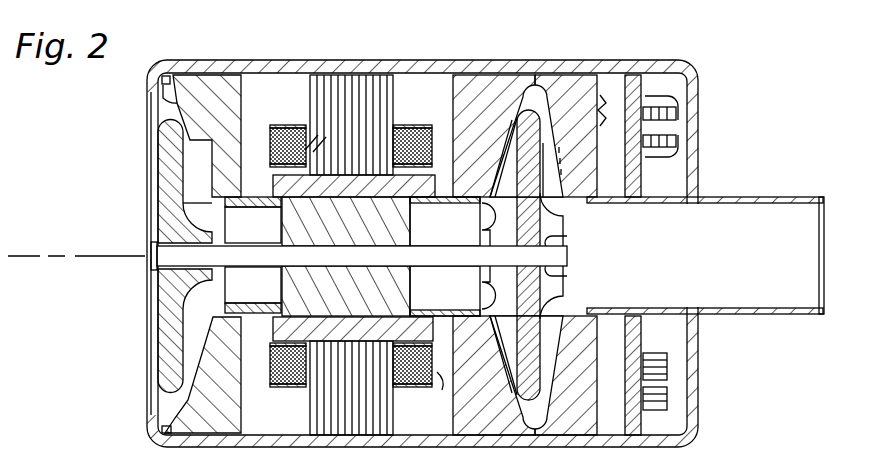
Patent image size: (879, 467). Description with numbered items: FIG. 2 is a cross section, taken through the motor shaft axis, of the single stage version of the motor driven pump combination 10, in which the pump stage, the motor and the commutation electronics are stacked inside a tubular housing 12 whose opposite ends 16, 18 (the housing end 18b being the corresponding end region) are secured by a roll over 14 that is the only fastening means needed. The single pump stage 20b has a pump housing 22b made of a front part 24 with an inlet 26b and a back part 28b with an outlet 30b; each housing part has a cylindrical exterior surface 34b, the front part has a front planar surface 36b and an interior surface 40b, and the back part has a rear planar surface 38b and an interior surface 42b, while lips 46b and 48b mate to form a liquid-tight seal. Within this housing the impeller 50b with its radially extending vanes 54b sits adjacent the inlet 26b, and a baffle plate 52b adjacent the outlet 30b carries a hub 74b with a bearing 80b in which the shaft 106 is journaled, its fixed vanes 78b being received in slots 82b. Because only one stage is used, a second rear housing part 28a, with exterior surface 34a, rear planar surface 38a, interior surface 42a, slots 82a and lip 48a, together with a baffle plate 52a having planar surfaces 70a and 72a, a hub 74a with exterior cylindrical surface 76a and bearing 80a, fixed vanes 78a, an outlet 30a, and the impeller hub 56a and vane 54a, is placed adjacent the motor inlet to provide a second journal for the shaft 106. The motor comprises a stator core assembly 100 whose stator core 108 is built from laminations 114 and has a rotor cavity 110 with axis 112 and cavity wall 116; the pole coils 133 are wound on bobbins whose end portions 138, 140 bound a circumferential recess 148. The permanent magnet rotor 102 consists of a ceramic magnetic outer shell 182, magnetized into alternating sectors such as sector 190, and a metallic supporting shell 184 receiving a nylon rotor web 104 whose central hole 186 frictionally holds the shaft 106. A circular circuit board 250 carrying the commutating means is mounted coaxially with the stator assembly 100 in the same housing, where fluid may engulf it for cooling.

The motor driven pump combination 10 is at (340, 61).
The tubular housing 12 is at (592, 73).
The roll over 14 is at (149, 88).
The end 16 is at (148, 124).
The end 18 is at (699, 123).
The magnetic sector 190 is at (699, 152).
The stator core assembly 100 is at (397, 91).
The pump housing 22b is at (469, 80).
The cylindrical exterior surface 34a is at (186, 73).
The cylindrical exterior surface 34b is at (577, 80).
The lip 48a is at (166, 76).
The lip 48b is at (648, 391).
The rear housing part 28a is at (197, 88).
The rear housing part 28b is at (580, 441).
The rear planar surface 38a is at (248, 76).
The rear planar surface 38b is at (614, 161).
The interior surface 42a is at (160, 104).
The interior surface 42b is at (600, 334).
The vane 54a is at (170, 157).
The vane 54b is at (486, 228).
The hub 56a is at (185, 222).
The axis 112 is at (83, 257).
The baffle plate 52a is at (150, 316).
The baffle plate 52b is at (622, 293).
The planar surface 70a is at (157, 361).
The fixed vanes 78a is at (196, 162).
The fixed vanes 78b is at (560, 208).
The radially extending slots 82a is at (196, 150).
The radially extending slots 82b is at (598, 112).
The end portion 138 is at (278, 124).
The end portion 140 is at (417, 127).
The core laminations 114 is at (278, 179).
The exterior cylindrical surface 76a is at (208, 227).
The outlet 30a is at (263, 209).
The outlet 30b is at (674, 204).
The bearing 80a is at (192, 246).
The bearing 80b is at (562, 274).
The hub 74a is at (203, 283).
The hub 74b is at (564, 243).
The planar surface 72a is at (218, 308).
The outer shell 182 is at (290, 320).
The metallic supporting shell 184 is at (276, 348).
The pole coils 133 is at (270, 366).
The stator core 108 is at (397, 443).
The wall 116 is at (378, 372).
The circumferential recess 148 is at (447, 391).
The front housing part 24 is at (428, 420).
The rotor cavity 110 is at (428, 340).
The interior surface 40b is at (490, 316).
The rotor web 104 is at (392, 292).
The inlet 26b is at (444, 306).
The impeller 50b is at (486, 275).
The cylindrical hole 186 is at (416, 244).
The permanent magnet rotor 102 is at (441, 206).
The front planar surface 36b is at (462, 192).
The shaft 106 is at (557, 257).
The circuit board 250 is at (645, 80).
The pump stage 20b is at (596, 72).
The lip 46b is at (553, 440).
The end wall 18b is at (492, 442).